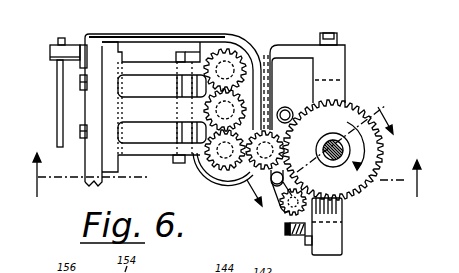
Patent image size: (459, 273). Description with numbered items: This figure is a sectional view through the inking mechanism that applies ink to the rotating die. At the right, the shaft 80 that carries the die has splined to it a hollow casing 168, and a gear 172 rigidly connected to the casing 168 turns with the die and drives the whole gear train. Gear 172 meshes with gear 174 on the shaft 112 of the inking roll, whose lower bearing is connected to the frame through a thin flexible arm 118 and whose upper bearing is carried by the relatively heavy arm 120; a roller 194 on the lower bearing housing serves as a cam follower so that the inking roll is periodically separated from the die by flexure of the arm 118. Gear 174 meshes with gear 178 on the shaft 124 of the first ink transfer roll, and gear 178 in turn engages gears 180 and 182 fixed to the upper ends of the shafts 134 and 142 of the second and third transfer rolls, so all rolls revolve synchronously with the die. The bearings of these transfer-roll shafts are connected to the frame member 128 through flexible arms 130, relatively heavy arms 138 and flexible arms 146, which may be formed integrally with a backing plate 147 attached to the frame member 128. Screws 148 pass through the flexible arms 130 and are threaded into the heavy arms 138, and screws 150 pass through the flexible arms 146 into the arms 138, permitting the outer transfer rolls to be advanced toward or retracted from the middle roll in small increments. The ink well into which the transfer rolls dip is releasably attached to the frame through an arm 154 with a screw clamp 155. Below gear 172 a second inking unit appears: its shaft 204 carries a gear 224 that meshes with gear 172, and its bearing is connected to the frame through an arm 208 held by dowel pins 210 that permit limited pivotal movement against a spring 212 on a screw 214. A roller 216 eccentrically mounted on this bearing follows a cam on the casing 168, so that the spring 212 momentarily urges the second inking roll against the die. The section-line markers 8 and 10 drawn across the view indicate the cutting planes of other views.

The screw clamp 155 is at (76, 42).
The backing plate 147 is at (113, 82).
The frame member 128 is at (95, 147).
The flexible arms 146 is at (128, 62).
The arm 154 is at (161, 37).
The screws 150 is at (151, 52).
The relatively heavy arms 138 is at (137, 101).
The gear 180 is at (177, 134).
The flexible arms 130 is at (151, 165).
The screws 148 is at (176, 155).
The gear 182 is at (229, 50).
The shaft 134 is at (202, 107).
The shaft 124 is at (201, 165).
The shaft 112 is at (284, 154).
The gear 178 is at (222, 175).
The gear 174 is at (233, 176).
The shaft 142 is at (258, 48).
The relatively heavy arm 120 is at (290, 46).
The flexible arm 118 is at (272, 68).
The roller 194 is at (290, 99).
The shaft 80 is at (337, 134).
The casing 168 is at (341, 169).
The gear 172 is at (372, 190).
The roller 216 is at (286, 181).
The gear 224 is at (295, 214).
The shaft 204 is at (281, 207).
The screw 214 is at (290, 230).
The spring 212 is at (308, 238).
The arm 208 is at (312, 247).
The dowel pins 210 is at (307, 246).
The section line 10- 10 is at (316, 155).
The section line 8- 8 is at (228, 175).